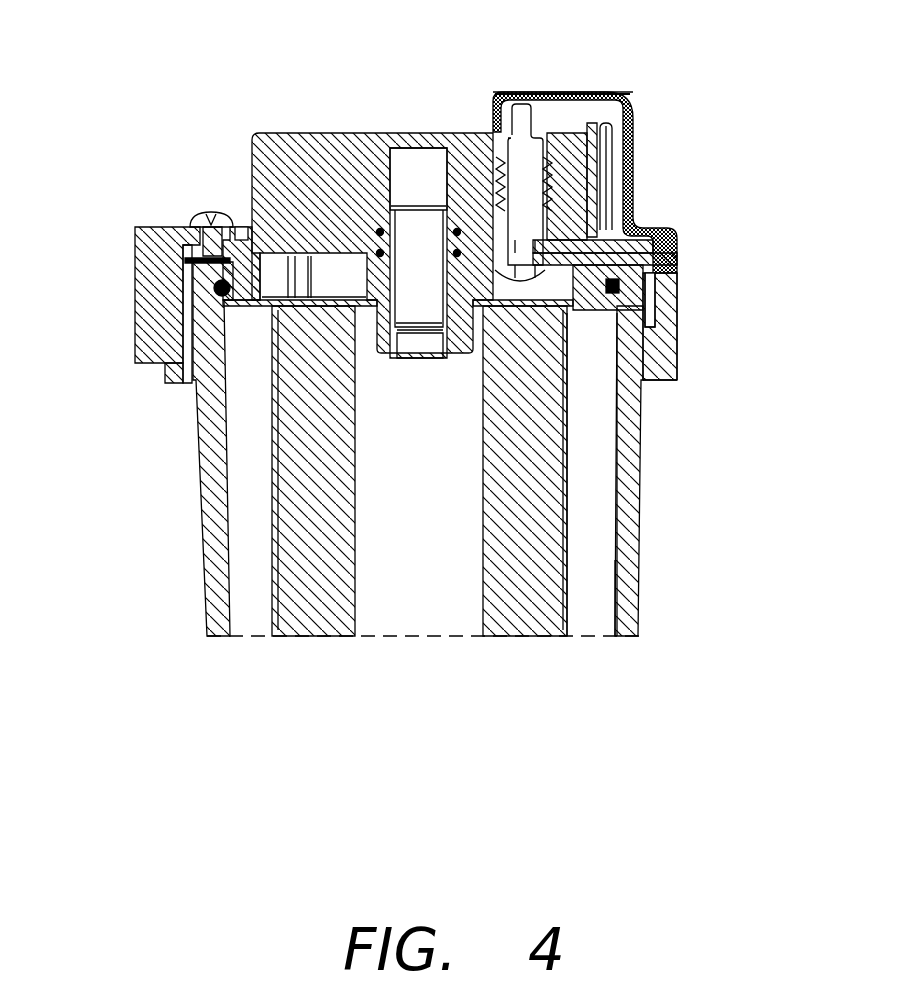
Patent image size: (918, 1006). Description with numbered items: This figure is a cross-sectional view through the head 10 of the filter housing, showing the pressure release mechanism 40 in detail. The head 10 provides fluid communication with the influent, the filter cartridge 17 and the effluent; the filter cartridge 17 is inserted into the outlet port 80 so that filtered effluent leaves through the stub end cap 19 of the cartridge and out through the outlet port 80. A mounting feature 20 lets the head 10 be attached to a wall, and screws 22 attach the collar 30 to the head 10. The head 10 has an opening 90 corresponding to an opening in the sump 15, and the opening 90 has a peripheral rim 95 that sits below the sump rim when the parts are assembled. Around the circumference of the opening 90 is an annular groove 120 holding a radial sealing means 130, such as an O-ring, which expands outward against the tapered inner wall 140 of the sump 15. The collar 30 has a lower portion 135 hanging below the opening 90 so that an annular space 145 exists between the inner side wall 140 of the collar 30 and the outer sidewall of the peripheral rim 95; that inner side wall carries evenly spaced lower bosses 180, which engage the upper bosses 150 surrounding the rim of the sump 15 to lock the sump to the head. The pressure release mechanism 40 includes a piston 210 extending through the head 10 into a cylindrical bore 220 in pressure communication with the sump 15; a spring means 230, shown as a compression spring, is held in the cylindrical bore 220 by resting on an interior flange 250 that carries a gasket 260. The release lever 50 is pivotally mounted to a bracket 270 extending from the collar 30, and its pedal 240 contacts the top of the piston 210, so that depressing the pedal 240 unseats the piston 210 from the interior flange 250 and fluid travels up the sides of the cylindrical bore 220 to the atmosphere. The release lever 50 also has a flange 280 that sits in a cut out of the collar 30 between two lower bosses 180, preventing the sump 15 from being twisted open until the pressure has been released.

The head 10 is at (243, 127).
The sump 15 is at (630, 530).
The filter cartridge 17 is at (277, 527).
The stub end cap 19 is at (380, 225).
The mounting feature 20 is at (148, 228).
The screws 22 is at (210, 223).
The collar 30 is at (678, 330).
The pressure release mechanism 40 is at (527, 73).
The release lever 50 is at (607, 93).
The outlet port 80 is at (405, 273).
The opening 90 is at (593, 318).
The peripheral rim 95 is at (192, 260).
The annular groove 120 is at (214, 289).
The radial sealing means 130 is at (678, 307).
The lower portion 135 is at (678, 381).
The inner side wall 140 is at (627, 563).
The annular space 145 is at (187, 405).
The upper bosses 150 is at (190, 313).
The lower bosses 180 is at (652, 348).
The piston 210 is at (517, 147).
The cylindrical bore 220 is at (552, 163).
The spring means 230 is at (562, 179).
The pedal 240 is at (507, 90).
The interior flange 250 is at (678, 274).
The gasket 260 is at (678, 248).
The bracket 270 is at (604, 130).
The flange 280 is at (672, 268).